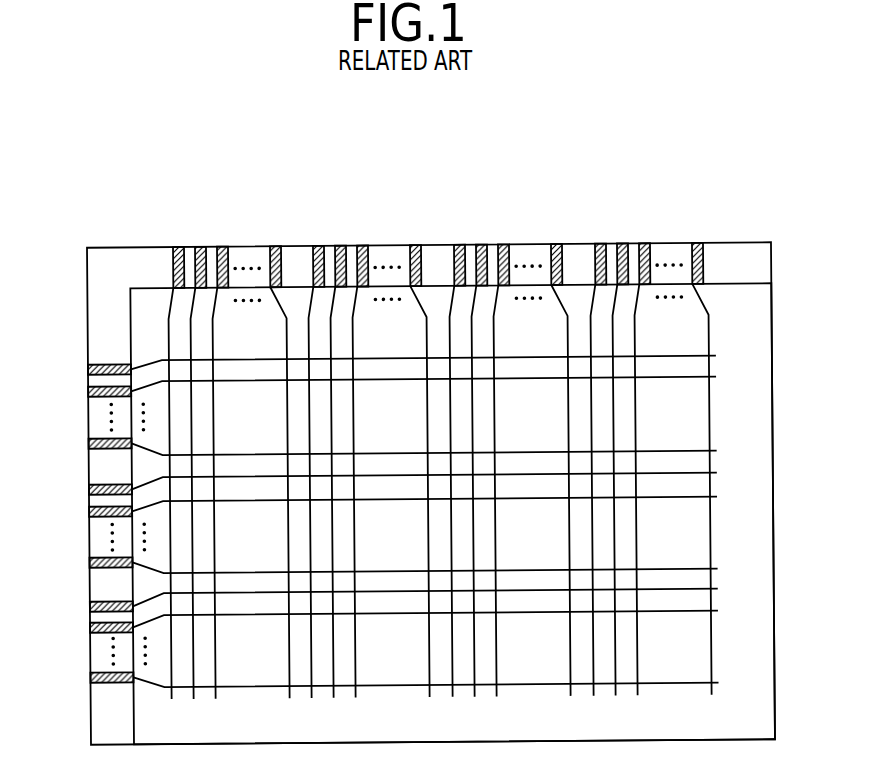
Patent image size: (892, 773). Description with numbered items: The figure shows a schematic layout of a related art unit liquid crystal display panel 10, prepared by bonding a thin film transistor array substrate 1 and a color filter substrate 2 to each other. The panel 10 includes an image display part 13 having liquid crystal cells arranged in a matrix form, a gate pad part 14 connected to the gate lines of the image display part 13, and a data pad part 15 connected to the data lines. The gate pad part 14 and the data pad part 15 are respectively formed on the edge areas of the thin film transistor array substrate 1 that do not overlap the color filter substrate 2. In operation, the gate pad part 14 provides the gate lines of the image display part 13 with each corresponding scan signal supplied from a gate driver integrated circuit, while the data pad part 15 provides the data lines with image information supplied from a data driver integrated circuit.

The thin film transistor array substrate 1 is at (760, 268).
The color filter substrate 2 is at (759, 326).
The liquid crystal display panel 10 is at (442, 447).
The image display part 13 is at (407, 427).
The gate pad part 14 is at (78, 680).
The data pad part 15 is at (709, 228).